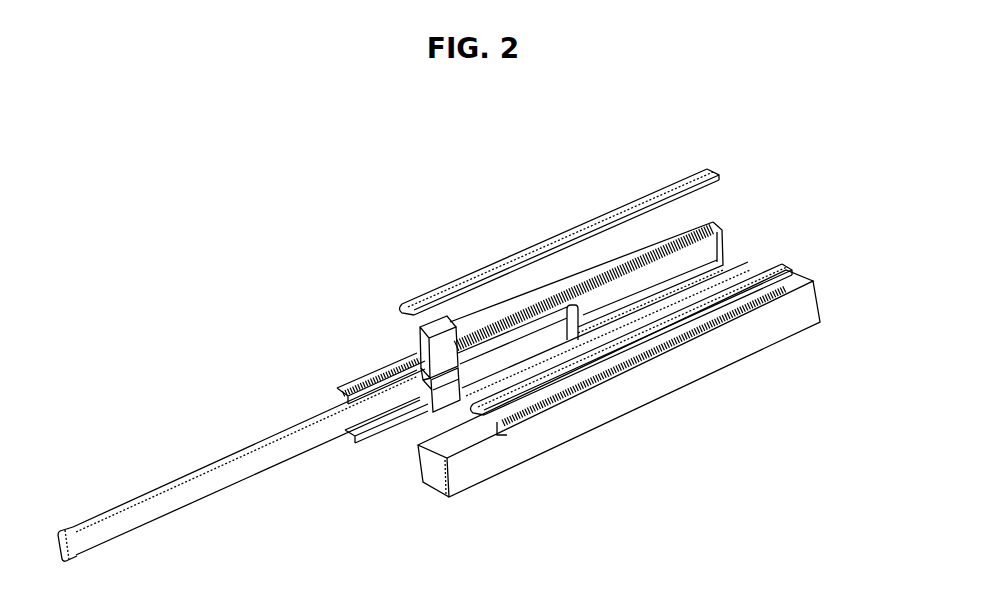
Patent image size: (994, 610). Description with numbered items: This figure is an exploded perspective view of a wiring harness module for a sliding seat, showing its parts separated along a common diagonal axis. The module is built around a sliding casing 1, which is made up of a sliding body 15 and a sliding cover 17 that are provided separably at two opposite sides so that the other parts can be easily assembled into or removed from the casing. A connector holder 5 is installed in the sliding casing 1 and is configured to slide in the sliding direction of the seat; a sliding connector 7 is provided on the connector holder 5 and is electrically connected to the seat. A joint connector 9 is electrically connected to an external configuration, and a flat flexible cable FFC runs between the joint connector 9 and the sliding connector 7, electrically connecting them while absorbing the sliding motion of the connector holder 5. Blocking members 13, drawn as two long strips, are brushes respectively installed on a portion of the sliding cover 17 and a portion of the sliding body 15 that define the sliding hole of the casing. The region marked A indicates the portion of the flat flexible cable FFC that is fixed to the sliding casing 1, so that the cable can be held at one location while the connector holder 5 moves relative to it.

The sliding casing 1 is at (862, 276).
The connector holder 5 is at (406, 326).
The sliding connector 7 is at (427, 315).
The joint connector 9 is at (67, 528).
The blocking members 13 is at (707, 174).
The sliding body 15 is at (796, 312).
The sliding cover 17 is at (713, 221).
The portion of the FFC fixed to the sliding casing A is at (421, 417).
The flat flexible cable FFC is at (243, 460).